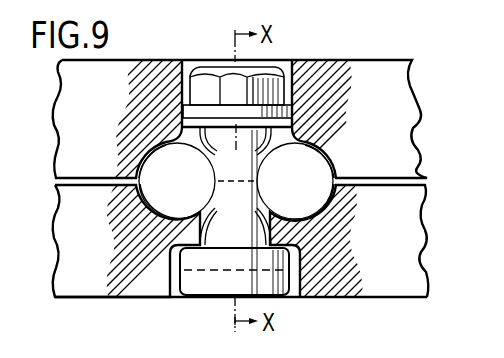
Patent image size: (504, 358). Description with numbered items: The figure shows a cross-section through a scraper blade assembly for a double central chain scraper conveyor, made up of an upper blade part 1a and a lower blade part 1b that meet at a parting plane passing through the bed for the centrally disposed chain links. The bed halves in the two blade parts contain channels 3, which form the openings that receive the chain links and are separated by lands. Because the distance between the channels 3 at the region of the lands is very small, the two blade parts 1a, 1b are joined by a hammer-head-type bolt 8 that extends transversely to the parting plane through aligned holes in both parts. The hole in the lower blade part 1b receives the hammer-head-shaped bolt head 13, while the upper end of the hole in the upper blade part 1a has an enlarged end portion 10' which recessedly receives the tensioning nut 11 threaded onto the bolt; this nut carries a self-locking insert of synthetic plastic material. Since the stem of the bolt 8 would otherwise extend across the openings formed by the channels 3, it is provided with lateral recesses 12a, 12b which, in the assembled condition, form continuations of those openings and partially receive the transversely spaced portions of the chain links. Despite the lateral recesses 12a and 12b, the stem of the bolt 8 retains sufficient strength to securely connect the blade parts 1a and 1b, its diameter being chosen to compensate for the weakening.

The upper blade part 1a is at (392, 112).
The lower blade part 1b is at (405, 281).
The channels 3 is at (312, 206).
The hammer-head-type bolt 8 is at (287, 114).
The enlarged end portion of the hole 10' is at (211, 100).
The tensioning nut 11 is at (268, 86).
The lateral recess 12a is at (215, 158).
The lateral recess 12b is at (263, 165).
The hammer-head-shaped bolt head 13 is at (198, 290).